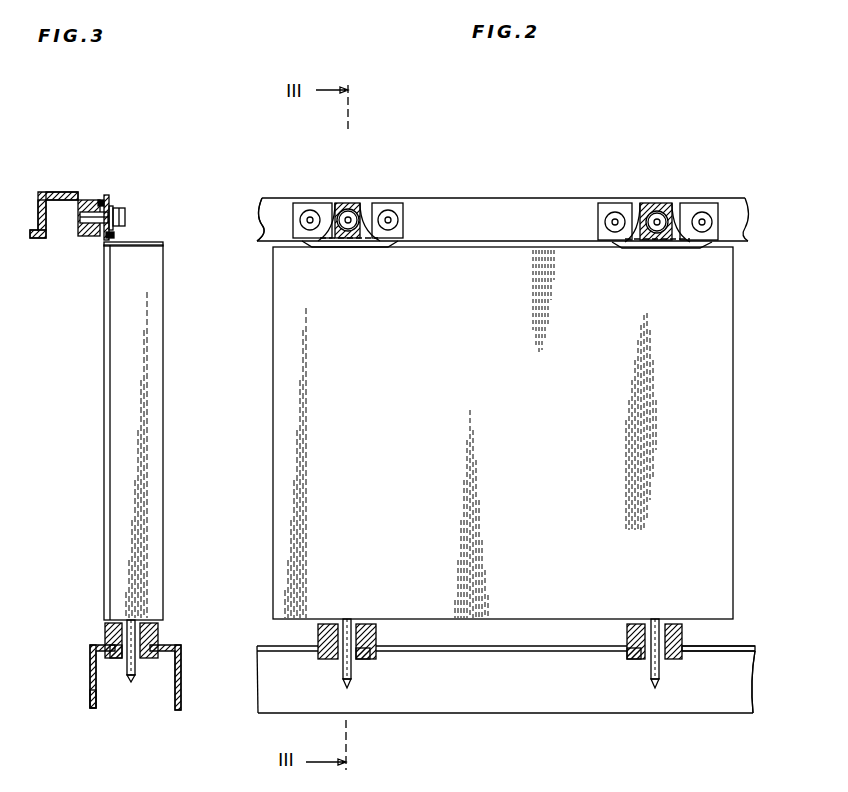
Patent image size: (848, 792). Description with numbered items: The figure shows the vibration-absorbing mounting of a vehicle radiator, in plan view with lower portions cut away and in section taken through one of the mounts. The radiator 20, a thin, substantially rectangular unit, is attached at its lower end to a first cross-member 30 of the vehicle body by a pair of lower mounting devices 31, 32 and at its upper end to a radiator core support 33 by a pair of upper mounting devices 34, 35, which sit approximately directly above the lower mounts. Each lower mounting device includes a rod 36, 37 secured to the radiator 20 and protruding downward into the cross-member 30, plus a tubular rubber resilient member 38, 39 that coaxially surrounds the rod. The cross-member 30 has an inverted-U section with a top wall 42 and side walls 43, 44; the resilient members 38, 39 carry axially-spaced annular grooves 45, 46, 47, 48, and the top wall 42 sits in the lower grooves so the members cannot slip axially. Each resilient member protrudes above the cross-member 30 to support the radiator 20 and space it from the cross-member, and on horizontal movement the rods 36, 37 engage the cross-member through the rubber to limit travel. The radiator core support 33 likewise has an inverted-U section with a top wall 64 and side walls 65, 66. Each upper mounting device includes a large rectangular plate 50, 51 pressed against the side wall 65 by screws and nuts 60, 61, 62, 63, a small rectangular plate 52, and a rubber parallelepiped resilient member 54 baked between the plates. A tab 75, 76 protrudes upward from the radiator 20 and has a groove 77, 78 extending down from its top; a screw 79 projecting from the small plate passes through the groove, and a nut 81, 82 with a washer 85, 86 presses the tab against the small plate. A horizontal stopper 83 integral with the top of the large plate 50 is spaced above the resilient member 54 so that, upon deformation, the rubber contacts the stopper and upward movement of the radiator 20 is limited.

In FIG. 3, the radiator 20 is at (163, 392).
In FIG. 2, the radiator 20 is at (733, 395).
In FIG. 3, the first cross-member 30 is at (186, 710).
In FIG. 2, the first cross-member 30 is at (490, 715).
In FIG. 3, the lower mounting device 31 is at (172, 640).
In FIG. 2, the lower mounting device 31 is at (352, 617).
In FIG. 2, the lower mounting device 32 is at (658, 610).
In FIG. 3, the radiator core support 33 is at (62, 192).
In FIG. 2, the radiator core support 33 is at (530, 198).
In FIG. 3, the upper mounting device 34 is at (144, 227).
In FIG. 2, the upper mounting device 34 is at (368, 234).
In FIG. 2, the upper mounting device 35 is at (680, 224).
In FIG. 3, the rod 36 is at (132, 682).
In FIG. 2, the rod 36 is at (350, 684).
In FIG. 2, the rod 37 is at (657, 689).
In FIG. 3, the tubular resilient member 38 is at (160, 622).
In FIG. 2, the tubular resilient member 38 is at (328, 625).
In FIG. 2, the tubular resilient member 39 is at (636, 626).
In FIG. 3, the top wall 42 is at (92, 640).
In FIG. 2, the top wall 42 is at (740, 647).
In FIG. 3, the side wall 43 is at (90, 700).
In FIG. 2, the side wall 43 is at (742, 676).
In FIG. 3, the side wall 44 is at (182, 668).
In FIG. 3, the annular groove 45 is at (112, 655).
In FIG. 2, the annular groove 45 is at (368, 650).
In FIG. 2, the annular groove 46 is at (633, 657).
In FIG. 3, the annular groove 47 is at (105, 630).
In FIG. 2, the annular groove 47 is at (376, 634).
In FIG. 2, the annular groove 48 is at (688, 634).
In FIG. 3, the large rectangular plate 50 is at (90, 200).
In FIG. 2, the large rectangular plate 50 is at (403, 212).
In FIG. 2, the large rectangular plate 51 is at (715, 217).
In FIG. 3, the small rectangular plate 52 is at (115, 247).
In FIG. 3, the rectangular resilient member 54 is at (90, 236).
In FIG. 2, the nut 60 is at (310, 210).
In FIG. 2, the nut 61 is at (390, 210).
In FIG. 2, the nut 62 is at (615, 212).
In FIG. 2, the nut 63 is at (705, 213).
In FIG. 3, the top wall 64 is at (45, 192).
In FIG. 2, the top wall 64 is at (262, 202).
In FIG. 3, the side wall 65 is at (66, 228).
In FIG. 2, the side wall 65 is at (257, 240).
In FIG. 3, the side wall 66 is at (45, 228).
In FIG. 3, the tab 75 is at (110, 197).
In FIG. 2, the tab 75 is at (375, 242).
In FIG. 2, the tab 76 is at (632, 242).
In FIG. 2, the groove 77 is at (352, 206).
In FIG. 2, the groove 78 is at (664, 206).
In FIG. 3, the screw 79 is at (114, 236).
In FIG. 3, the nut 81 is at (125, 216).
In FIG. 2, the nut 81 is at (345, 211).
In FIG. 2, the nut 82 is at (654, 212).
In FIG. 3, the stopper 83 is at (102, 204).
In FIG. 3, the washer 85 is at (113, 210).
In FIG. 2, the washer 85 is at (343, 239).
In FIG. 2, the washer 86 is at (651, 243).